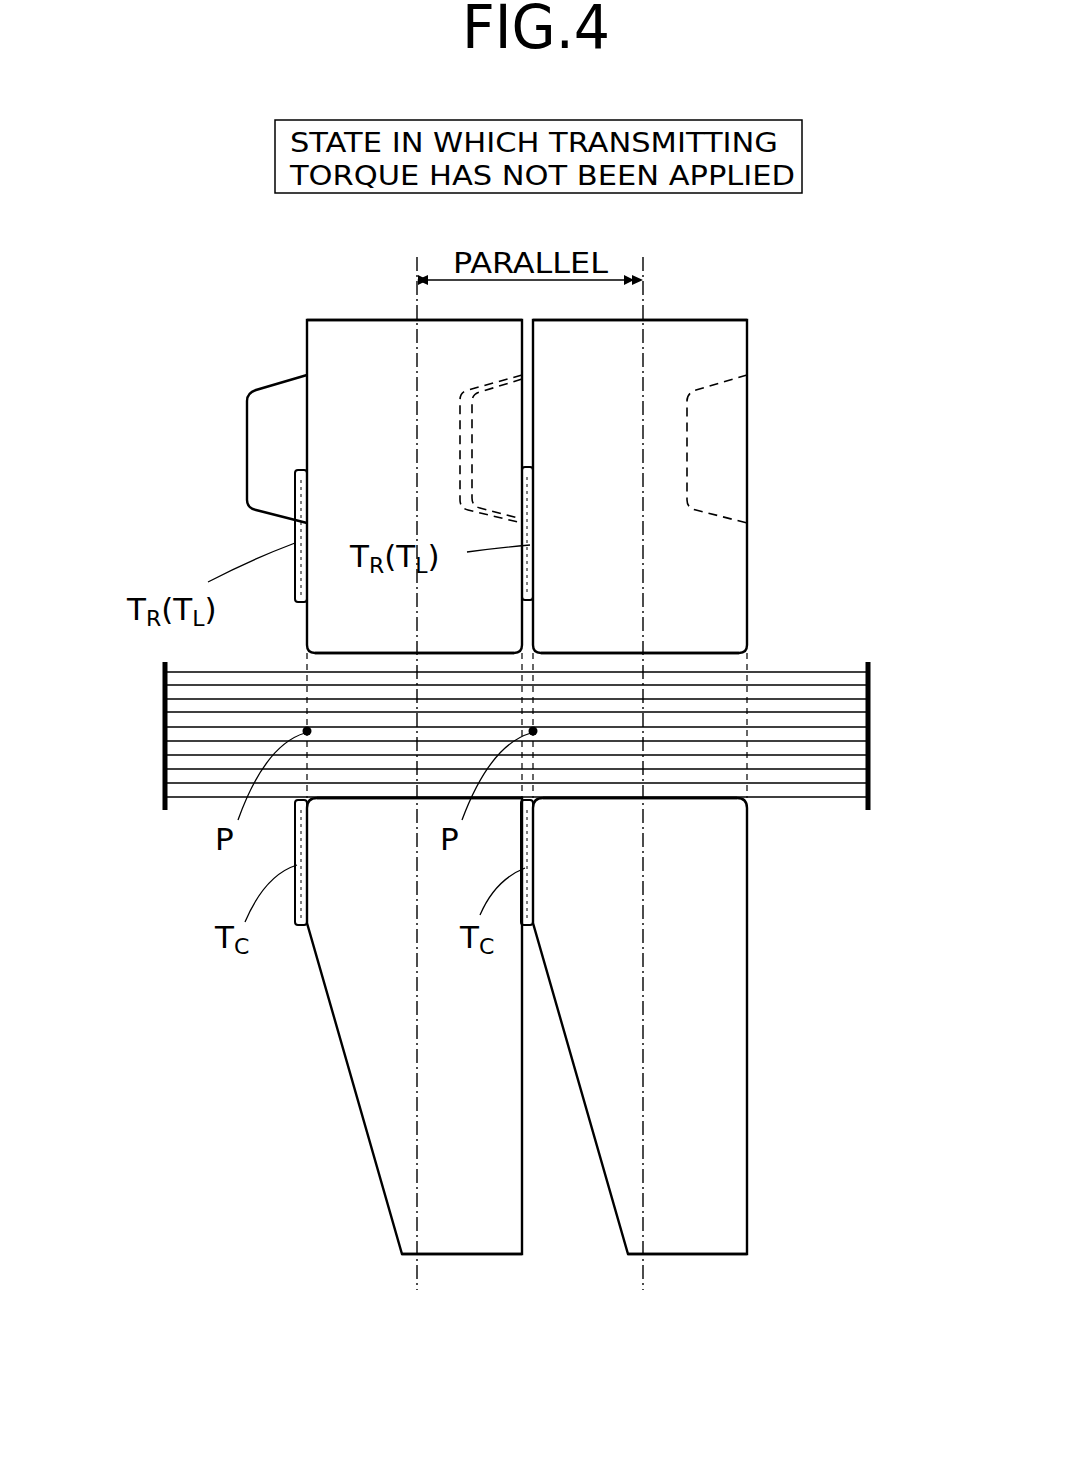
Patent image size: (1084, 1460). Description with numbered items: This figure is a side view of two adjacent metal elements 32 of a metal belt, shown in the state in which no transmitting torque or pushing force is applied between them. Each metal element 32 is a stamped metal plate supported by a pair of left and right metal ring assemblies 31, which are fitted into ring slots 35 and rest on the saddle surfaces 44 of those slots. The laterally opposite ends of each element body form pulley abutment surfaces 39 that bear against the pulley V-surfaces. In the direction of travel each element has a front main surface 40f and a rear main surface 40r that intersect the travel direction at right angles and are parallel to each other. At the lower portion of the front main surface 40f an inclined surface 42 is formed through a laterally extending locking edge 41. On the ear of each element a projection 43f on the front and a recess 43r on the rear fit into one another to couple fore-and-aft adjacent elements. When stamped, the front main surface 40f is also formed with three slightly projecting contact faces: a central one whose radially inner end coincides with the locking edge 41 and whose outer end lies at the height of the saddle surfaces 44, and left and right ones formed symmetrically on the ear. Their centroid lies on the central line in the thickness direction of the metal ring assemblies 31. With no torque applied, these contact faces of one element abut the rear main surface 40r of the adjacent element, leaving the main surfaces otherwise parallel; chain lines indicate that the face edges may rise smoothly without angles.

The metal ring assembly 31 is at (796, 658).
The metal element 32 is at (340, 314).
The ring slot 35 is at (358, 663).
The pulley abutment surface 39 is at (468, 1237).
The front main surface 40f is at (303, 338).
The rear main surface 40r is at (753, 346).
The locking edge 41 is at (312, 935).
The inclined surface 42 is at (340, 1045).
The projection 43f is at (277, 420).
The recess 43r is at (722, 381).
The saddle surface 44 is at (356, 797).